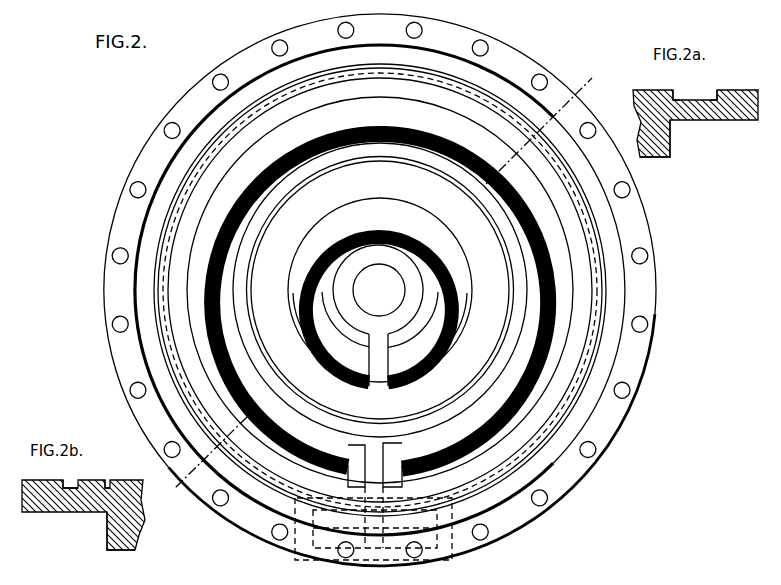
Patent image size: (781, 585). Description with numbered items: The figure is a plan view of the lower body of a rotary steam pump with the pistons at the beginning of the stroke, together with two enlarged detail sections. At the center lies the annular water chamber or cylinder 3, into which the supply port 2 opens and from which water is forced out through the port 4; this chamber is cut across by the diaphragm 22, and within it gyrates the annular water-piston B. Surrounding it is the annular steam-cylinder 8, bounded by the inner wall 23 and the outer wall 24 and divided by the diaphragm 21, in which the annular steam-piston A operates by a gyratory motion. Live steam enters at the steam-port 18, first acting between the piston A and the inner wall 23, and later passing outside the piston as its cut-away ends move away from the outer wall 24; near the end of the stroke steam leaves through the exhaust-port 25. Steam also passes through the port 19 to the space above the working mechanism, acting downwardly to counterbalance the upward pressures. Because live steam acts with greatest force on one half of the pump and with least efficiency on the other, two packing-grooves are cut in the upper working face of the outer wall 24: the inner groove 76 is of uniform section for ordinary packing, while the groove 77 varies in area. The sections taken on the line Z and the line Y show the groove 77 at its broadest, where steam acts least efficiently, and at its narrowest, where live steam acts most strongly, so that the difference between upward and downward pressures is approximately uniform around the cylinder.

In FIG. 2, the port 2 is at (378, 304).
In FIG. 2, the annular water chamber or cylinder 3 is at (380, 290).
In FIG. 2, the port 4 is at (380, 333).
In FIG. 2, the annular steam-cylinder 8 is at (380, 290).
In FIG. 2A, the annular steam-cylinder 8 is at (636, 99).
In FIG. 2B, the annular steam-cylinder 8 is at (132, 540).
In FIG. 2, the steam-port 18 is at (350, 493).
In FIG. 2, the port 19 is at (351, 511).
In FIG. 2, the diaphragm 21 is at (378, 458).
In FIG. 2, the diaphragm 22 is at (388, 360).
In FIG. 2, the inner wall 23 is at (380, 290).
In FIG. 2, the outer wall 24 is at (491, 137).
In FIG. 2A, the outer wall 24 is at (667, 140).
In FIG. 2B, the outer wall 24 is at (110, 538).
In FIG. 2, the exhaust-port 25 is at (400, 497).
In FIG. 2, the inner packing-groove 76 is at (593, 223).
In FIG. 2A, the inner packing-groove 76 is at (675, 93).
In FIG. 2B, the inner packing-groove 76 is at (108, 485).
In FIG. 2, the packing-groove 77 is at (600, 208).
In FIG. 2A, the packing-groove 77 is at (708, 96).
In FIG. 2B, the packing-groove 77 is at (67, 484).
In FIG. 2, the annular steam-piston A is at (380, 294).
In FIG. 2, the annular water-piston B is at (379, 306).
In FIG. 2, the section line Z is at (546, 123).
In FIG. 2, the section line Y is at (204, 463).